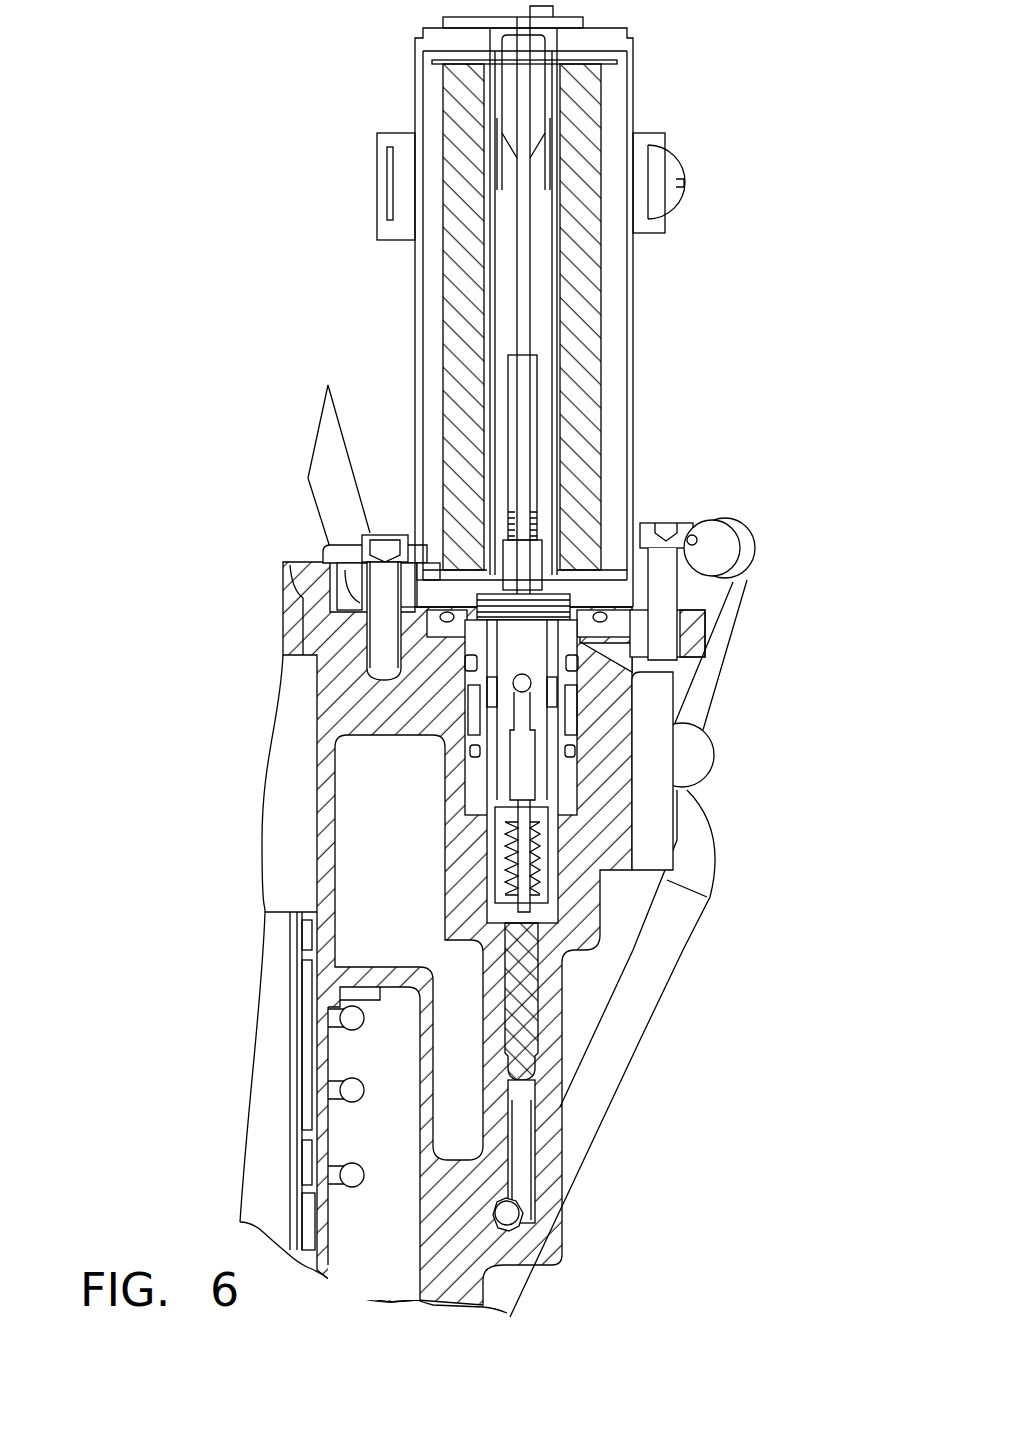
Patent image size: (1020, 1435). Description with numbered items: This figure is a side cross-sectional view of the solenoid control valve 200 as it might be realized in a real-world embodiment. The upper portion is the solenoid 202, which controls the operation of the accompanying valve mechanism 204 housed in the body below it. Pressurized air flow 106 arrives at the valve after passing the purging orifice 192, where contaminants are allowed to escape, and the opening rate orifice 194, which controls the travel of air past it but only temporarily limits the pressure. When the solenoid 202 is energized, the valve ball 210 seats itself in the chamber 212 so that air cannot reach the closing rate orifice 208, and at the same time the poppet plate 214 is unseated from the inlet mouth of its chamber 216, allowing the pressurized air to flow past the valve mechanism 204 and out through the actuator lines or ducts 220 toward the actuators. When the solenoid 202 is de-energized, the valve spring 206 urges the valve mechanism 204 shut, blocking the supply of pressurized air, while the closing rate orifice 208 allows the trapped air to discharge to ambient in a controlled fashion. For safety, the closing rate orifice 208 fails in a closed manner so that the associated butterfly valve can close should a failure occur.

The solenoid control valve 200 is at (694, 243).
The solenoid 202 is at (635, 312).
The valve mechanism 204 is at (430, 842).
The valve spring 206 is at (545, 885).
The closing rate orifice 208 is at (632, 672).
The valve ball 210 is at (517, 688).
The chamber 212 is at (490, 678).
The poppet plate 214 is at (515, 712).
The chamber 216 is at (540, 903).
The actuator lines or ducts 220 is at (660, 1005).
The opening rate orifice 194 is at (538, 1053).
The pressurized air flow 106 is at (527, 1192).
The purging orifice 192 is at (507, 1225).